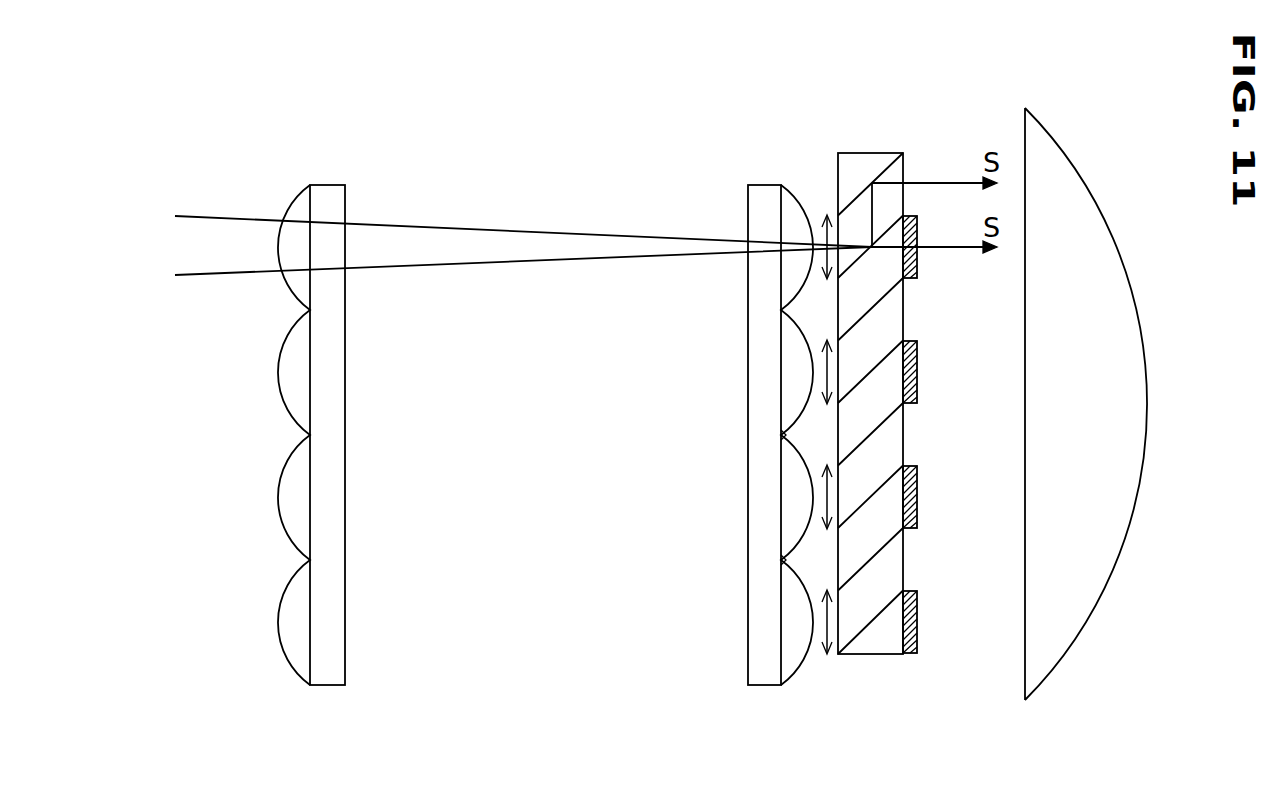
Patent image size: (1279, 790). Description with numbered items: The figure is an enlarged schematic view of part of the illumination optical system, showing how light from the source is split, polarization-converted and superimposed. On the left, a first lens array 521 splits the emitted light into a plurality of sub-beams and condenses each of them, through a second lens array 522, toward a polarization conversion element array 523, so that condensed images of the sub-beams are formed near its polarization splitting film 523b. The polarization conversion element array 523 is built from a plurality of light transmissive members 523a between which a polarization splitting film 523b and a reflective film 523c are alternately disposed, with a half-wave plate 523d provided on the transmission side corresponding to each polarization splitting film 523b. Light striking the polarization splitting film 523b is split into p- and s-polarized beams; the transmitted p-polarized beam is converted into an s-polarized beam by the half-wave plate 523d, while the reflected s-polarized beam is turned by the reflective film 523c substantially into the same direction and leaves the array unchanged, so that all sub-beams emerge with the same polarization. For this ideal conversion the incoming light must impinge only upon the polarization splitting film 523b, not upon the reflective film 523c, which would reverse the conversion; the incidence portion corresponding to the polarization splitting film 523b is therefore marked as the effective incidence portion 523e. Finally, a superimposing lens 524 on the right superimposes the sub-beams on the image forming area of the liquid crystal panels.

The first lens array 521 is at (292, 206).
The second lens array 522 is at (792, 188).
The polarization conversion element array 523 is at (857, 152).
The light transmissive member 523a is at (783, 433).
The polarization splitting film 523b is at (855, 263).
The reflective film 523c is at (893, 156).
The half-wave plate 523d is at (917, 270).
The effective incidence portion 523e is at (812, 228).
The superimposing lens 524 is at (1073, 165).